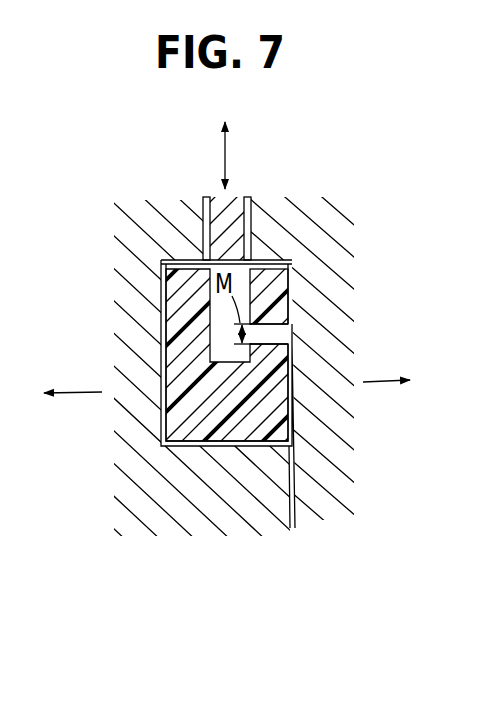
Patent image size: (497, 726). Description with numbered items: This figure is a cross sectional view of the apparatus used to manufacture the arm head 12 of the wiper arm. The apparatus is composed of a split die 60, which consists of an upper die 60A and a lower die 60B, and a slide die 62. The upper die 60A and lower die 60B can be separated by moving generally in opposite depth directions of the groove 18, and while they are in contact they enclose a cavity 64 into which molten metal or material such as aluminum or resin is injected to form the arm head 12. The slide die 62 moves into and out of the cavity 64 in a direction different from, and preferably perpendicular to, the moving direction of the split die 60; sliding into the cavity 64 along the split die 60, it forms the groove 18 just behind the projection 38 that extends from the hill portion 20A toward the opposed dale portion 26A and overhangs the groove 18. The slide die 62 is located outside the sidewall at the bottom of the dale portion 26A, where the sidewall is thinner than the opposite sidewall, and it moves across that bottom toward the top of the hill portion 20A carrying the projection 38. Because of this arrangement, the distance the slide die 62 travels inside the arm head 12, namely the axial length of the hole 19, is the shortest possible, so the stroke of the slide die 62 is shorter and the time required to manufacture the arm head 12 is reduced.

The arm head 12 is at (158, 300).
The groove 18 is at (228, 334).
The hole 19 is at (245, 300).
The second hill portion 20A is at (240, 347).
The second dale portion 26A is at (292, 324).
The projection 38 is at (292, 334).
The split die 60 is at (248, 368).
The upper die 60A is at (229, 528).
The lower die 60B is at (337, 525).
The slide die 62 is at (208, 203).
The cavity 64 is at (203, 398).